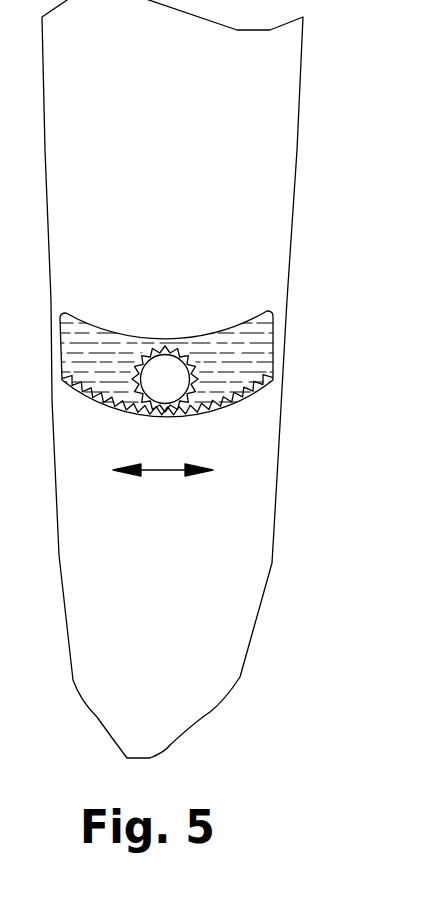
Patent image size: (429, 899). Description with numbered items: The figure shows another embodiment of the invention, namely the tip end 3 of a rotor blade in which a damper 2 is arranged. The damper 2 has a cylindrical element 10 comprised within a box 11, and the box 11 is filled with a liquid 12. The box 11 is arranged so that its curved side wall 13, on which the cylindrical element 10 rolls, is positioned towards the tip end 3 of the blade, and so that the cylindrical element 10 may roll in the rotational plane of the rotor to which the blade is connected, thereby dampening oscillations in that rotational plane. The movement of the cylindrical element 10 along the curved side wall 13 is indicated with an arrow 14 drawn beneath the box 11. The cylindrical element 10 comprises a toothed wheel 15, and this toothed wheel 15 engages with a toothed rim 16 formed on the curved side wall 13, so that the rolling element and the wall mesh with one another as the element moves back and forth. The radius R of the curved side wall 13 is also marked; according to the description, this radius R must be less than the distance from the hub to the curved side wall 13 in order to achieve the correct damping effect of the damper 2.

The damper 2 is at (163, 345).
The tip end 3 is at (263, 668).
The cylindrical element 10 is at (267, 350).
The box 11 is at (224, 356).
The liquid 12 is at (250, 365).
The curved side wall 13 is at (247, 398).
The arrow 14 is at (178, 487).
The toothed wheel 15 is at (182, 351).
The toothed rim 16 is at (112, 407).
The radius of the curved side wall R is at (73, 383).